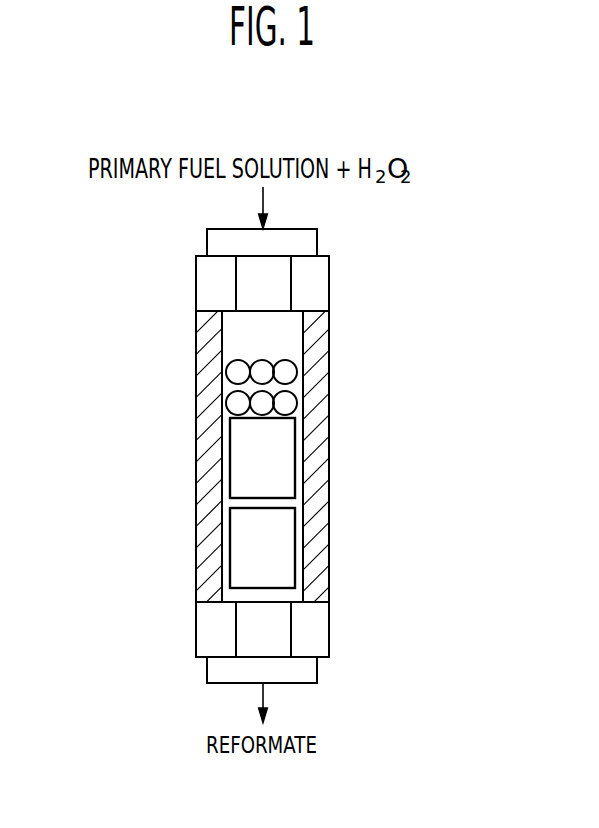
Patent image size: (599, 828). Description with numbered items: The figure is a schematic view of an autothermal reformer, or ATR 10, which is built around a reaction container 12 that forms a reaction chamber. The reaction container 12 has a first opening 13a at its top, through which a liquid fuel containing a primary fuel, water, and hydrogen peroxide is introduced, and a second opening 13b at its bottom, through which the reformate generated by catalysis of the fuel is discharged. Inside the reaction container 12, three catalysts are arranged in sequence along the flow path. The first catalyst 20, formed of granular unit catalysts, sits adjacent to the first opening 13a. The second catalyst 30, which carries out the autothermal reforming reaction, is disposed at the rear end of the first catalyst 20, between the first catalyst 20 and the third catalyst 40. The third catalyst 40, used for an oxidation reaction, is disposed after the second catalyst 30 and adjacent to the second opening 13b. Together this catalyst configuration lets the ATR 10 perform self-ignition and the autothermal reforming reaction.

The autothermal reformer 10 is at (134, 137).
The reaction container 12 is at (318, 341).
The first opening 13a is at (264, 228).
The second opening 13b is at (264, 684).
The first catalyst 20 is at (291, 403).
The second catalyst 30 is at (283, 448).
The third catalyst 40 is at (280, 536).